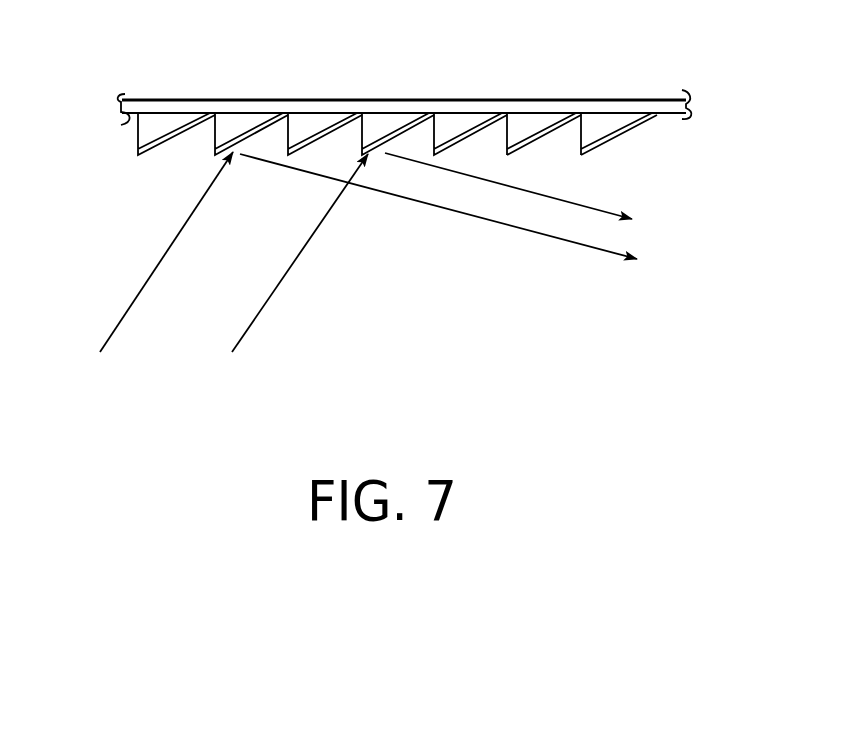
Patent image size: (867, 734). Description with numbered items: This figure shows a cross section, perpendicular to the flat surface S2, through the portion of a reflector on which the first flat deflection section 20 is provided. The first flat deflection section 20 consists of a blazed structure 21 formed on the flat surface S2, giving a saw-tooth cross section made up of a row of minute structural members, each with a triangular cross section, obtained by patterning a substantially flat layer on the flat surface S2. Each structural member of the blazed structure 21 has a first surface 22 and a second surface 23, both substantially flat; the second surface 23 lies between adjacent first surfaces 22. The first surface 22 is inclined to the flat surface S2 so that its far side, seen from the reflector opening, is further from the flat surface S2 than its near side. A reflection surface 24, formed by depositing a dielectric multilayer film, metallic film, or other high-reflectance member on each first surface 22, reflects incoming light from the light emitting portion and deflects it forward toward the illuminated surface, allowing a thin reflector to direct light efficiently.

The first flat deflection section 20 is at (382, 123).
The blazed structure 21 is at (607, 122).
The first surface 22 is at (551, 124).
The second surface 23 is at (508, 124).
The reflection surface 24 is at (627, 133).
The flat surface S2 is at (131, 123).